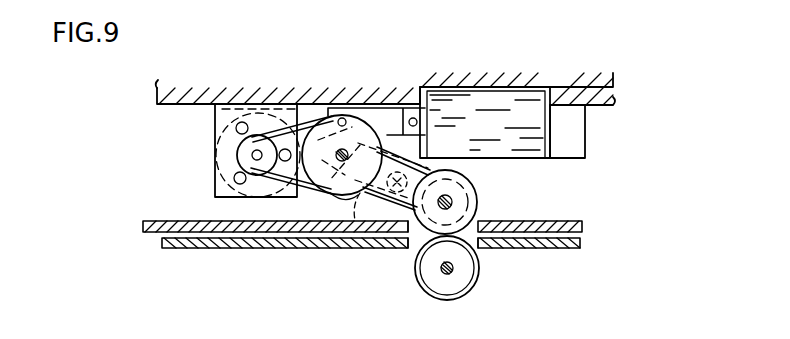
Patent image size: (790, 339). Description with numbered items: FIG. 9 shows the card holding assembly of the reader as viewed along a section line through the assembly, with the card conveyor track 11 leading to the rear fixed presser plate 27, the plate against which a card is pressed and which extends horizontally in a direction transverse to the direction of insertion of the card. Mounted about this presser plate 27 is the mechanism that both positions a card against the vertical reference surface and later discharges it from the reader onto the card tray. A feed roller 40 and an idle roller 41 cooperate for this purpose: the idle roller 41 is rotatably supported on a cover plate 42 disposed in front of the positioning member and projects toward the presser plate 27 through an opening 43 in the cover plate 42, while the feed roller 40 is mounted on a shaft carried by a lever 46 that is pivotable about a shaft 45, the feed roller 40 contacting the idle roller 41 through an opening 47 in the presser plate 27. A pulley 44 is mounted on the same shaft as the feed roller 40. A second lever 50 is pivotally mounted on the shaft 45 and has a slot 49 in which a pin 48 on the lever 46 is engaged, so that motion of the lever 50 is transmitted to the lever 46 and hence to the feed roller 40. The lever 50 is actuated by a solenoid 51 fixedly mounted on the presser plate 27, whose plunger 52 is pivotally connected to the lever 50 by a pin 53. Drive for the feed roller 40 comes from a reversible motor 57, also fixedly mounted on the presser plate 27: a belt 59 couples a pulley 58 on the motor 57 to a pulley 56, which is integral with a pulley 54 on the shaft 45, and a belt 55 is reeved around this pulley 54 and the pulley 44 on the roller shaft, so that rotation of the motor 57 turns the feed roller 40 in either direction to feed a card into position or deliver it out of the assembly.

The conveyor track 11 is at (576, 206).
The rear fixed presser plate 27 is at (585, 228).
The feed roller 40 is at (477, 214).
The idle roller 41 is at (465, 270).
The cover plate 42 is at (563, 247).
The opening 43 is at (478, 249).
The pulley 44 is at (482, 184).
The shaft 45 is at (323, 126).
The lever 46 is at (440, 190).
The opening 47 is at (417, 230).
The pin 48 is at (502, 122).
The slot 49 is at (392, 205).
The lever 50 is at (339, 233).
The solenoid 51 is at (480, 132).
The plunger 52 is at (390, 112).
The pin 53 is at (342, 117).
The pulley 54 is at (296, 118).
The belt 55 is at (412, 108).
The pulley 56 is at (330, 193).
The reversible motor 57 is at (222, 157).
The pulley 58 is at (255, 168).
The belt 59 is at (262, 112).